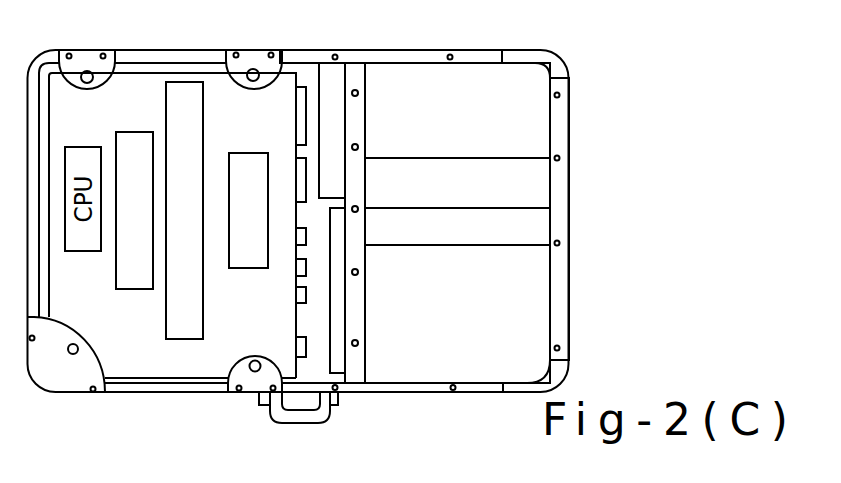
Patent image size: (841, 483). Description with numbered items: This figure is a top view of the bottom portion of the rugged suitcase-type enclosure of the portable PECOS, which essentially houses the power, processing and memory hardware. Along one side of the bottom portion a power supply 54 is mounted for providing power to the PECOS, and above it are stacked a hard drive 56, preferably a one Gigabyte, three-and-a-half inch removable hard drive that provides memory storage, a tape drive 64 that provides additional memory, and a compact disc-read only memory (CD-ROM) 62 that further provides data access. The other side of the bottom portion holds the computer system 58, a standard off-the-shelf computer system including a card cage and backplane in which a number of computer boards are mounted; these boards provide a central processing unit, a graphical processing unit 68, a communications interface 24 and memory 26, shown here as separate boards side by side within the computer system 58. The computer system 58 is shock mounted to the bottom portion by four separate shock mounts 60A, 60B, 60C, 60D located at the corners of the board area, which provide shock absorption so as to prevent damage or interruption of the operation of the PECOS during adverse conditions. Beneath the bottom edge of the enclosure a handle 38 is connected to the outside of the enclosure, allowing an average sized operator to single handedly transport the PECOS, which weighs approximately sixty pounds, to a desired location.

The communications interface 24 is at (205, 317).
The memory 26 is at (238, 152).
The handle 38 is at (330, 420).
The power supply 54 is at (530, 280).
The hard drive 56 is at (528, 87).
The computer system 58 is at (138, 86).
The shock mount 60A is at (87, 62).
The shock mount 60B is at (253, 60).
The shock mount 60C is at (248, 377).
The shock mount 60D is at (56, 377).
The compact disc-read only memory (CD-ROM) 62 is at (538, 223).
The tape drive 64 is at (538, 185).
The graphical processing unit 68 is at (137, 290).